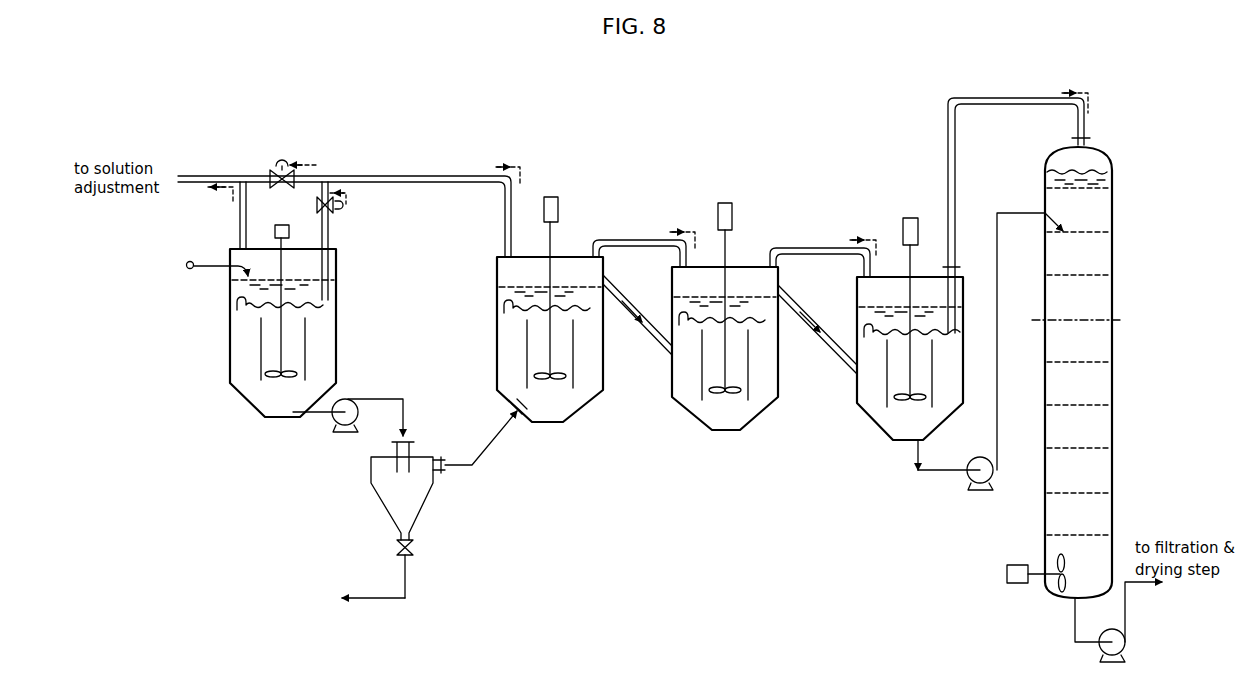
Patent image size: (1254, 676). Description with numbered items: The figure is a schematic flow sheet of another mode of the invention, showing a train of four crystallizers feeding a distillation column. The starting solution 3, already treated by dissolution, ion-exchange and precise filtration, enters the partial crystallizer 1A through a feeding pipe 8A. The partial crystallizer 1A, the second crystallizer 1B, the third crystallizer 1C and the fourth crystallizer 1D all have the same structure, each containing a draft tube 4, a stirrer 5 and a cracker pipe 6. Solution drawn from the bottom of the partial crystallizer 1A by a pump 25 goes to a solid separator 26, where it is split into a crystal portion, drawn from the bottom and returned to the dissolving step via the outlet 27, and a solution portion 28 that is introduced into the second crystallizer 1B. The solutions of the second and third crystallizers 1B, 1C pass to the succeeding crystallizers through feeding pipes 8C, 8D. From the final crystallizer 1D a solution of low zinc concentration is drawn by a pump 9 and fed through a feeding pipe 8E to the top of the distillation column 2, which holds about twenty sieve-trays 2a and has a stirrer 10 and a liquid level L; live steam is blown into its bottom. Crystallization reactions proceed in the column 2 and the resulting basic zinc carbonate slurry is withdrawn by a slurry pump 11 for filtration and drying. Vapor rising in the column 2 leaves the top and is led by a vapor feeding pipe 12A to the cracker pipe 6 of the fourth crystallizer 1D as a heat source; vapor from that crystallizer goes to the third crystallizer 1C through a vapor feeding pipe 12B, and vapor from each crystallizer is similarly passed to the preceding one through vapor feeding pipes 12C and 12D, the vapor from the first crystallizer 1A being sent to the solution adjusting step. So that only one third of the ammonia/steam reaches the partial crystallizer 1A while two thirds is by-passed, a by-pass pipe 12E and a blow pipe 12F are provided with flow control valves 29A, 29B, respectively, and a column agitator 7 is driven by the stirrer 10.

The partial crystallizer 1A is at (336, 362).
The second crystallizer 1B is at (603, 375).
The third crystallizer 1C is at (778, 384).
The fourth crystallizer 1D is at (963, 397).
The distillation column 2 is at (1112, 374).
The sieve-tray 2a is at (1093, 232).
The starting solution 3 is at (182, 268).
The draft tube 4 is at (305, 322).
The stirrer 5 is at (285, 378).
The cracker pipe 6 is at (248, 306).
The column agitator 7 is at (1050, 553).
The feeding pipe 8A is at (210, 269).
The feeding pipe 8C is at (635, 304).
The feeding pipe 8D is at (813, 316).
The feeding pipe 8E is at (997, 294).
The pump 9 is at (993, 470).
The stirrer 10 is at (1050, 588).
The slurry pump 11 is at (1125, 646).
The vapor feeding pipe 12A is at (999, 97).
The vapor feeding pipe 12B is at (804, 251).
The vapor feeding pipe 12C is at (628, 239).
The vapor feeding pipe 12D is at (417, 176).
The by-pass pipe 12E is at (310, 183).
The blow pipe 12F is at (329, 240).
The pump 25 is at (348, 432).
The solid separator 26 is at (426, 490).
The discharge outlet 27 is at (374, 598).
The solution portion 28 is at (464, 464).
The flow control valve 29A is at (280, 165).
The flow control valve 29B is at (343, 207).
The liquid level L is at (1093, 170).